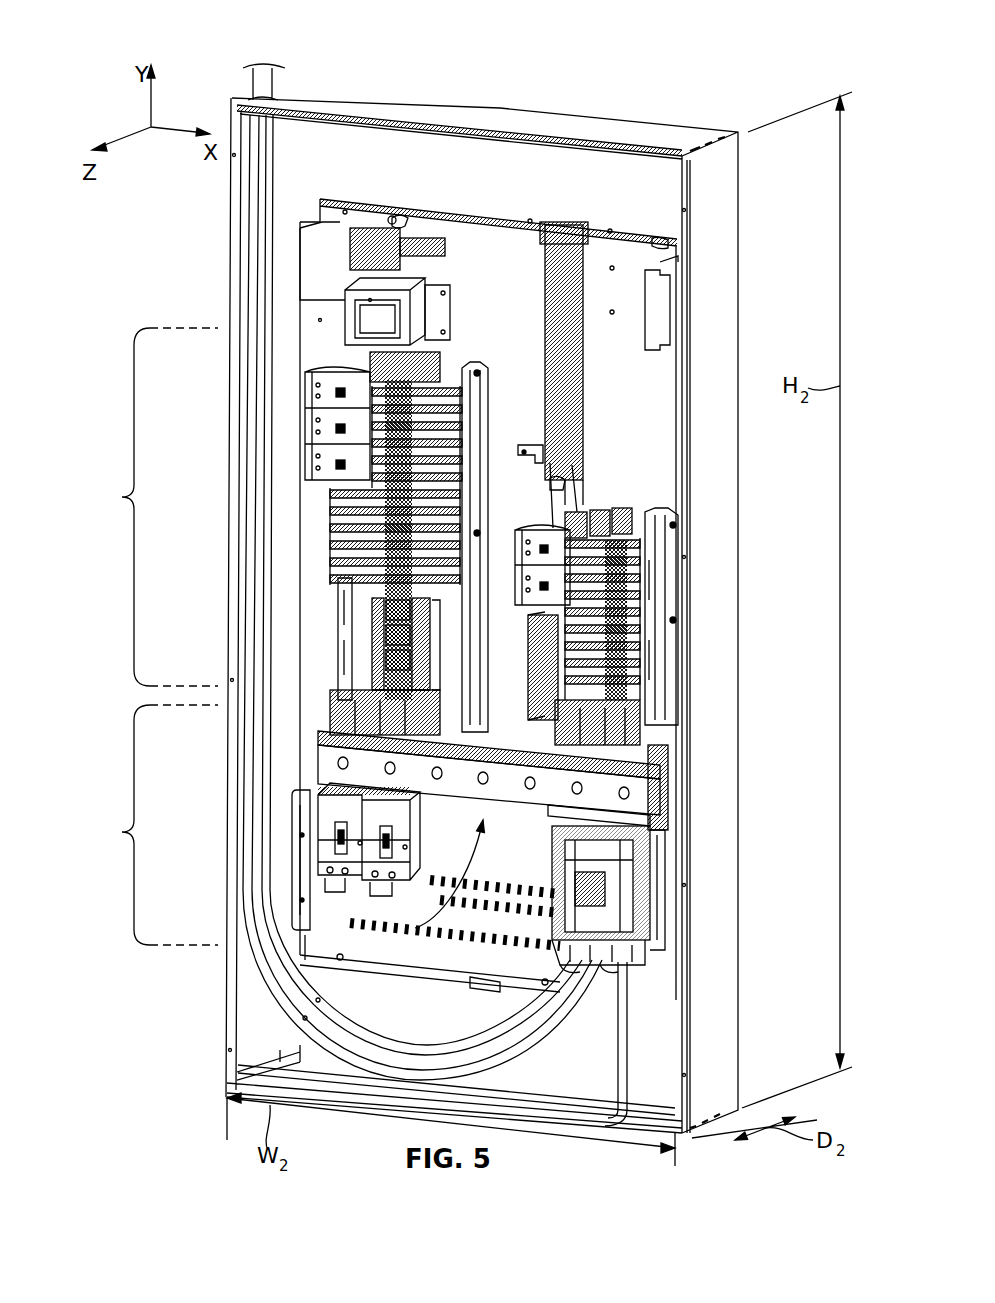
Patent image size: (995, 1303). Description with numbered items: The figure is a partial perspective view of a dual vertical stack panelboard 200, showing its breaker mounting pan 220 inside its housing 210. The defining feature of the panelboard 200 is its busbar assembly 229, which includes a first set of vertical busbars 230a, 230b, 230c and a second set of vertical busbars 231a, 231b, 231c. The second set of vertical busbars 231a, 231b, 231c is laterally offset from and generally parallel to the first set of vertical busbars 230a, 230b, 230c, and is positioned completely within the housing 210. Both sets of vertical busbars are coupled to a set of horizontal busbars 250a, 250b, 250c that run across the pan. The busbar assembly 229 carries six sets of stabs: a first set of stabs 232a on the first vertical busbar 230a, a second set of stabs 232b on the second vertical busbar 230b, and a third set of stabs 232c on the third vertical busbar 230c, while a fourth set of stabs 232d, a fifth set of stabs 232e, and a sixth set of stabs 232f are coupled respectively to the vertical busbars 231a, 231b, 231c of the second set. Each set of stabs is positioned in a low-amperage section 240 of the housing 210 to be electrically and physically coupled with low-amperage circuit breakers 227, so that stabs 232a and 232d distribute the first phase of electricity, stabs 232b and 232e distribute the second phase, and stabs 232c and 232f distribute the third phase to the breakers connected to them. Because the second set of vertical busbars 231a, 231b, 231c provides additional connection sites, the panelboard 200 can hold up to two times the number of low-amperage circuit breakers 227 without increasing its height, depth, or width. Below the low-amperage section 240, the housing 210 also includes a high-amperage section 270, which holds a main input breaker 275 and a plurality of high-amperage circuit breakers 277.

The dual vertical stack panelboard 200 is at (717, 102).
The housing 210 is at (566, 150).
The breaker mounting pan 220 is at (447, 230).
The low-amperage circuit breakers 227 is at (333, 385).
The busbar assembly 229 is at (335, 925).
The first vertical busbar of the first set 230a is at (368, 358).
The second vertical busbar of the first set 230b is at (400, 297).
The third vertical busbar of the first set 230c is at (362, 268).
The first vertical busbar of the second set 231a is at (583, 460).
The second vertical busbar of the second set 231b is at (600, 515).
The third vertical busbar of the second set 231c is at (632, 518).
The first set of stabs 232a is at (376, 657).
The second set of stabs 232b is at (378, 634).
The third set of stabs 232c is at (378, 608).
The fourth set of stabs 232d is at (350, 697).
The fifth set of stabs 232e is at (582, 720).
The sixth set of stabs 232f is at (545, 690).
The low-amperage section 240 is at (120, 497).
The first horizontal busbar 250a is at (640, 803).
The second horizontal busbar 250b is at (663, 797).
The third horizontal busbar 250c is at (667, 773).
The high-amperage section 270 is at (120, 832).
The main input breaker 275 is at (620, 870).
The high-amperage circuit breakers 277 is at (325, 820).